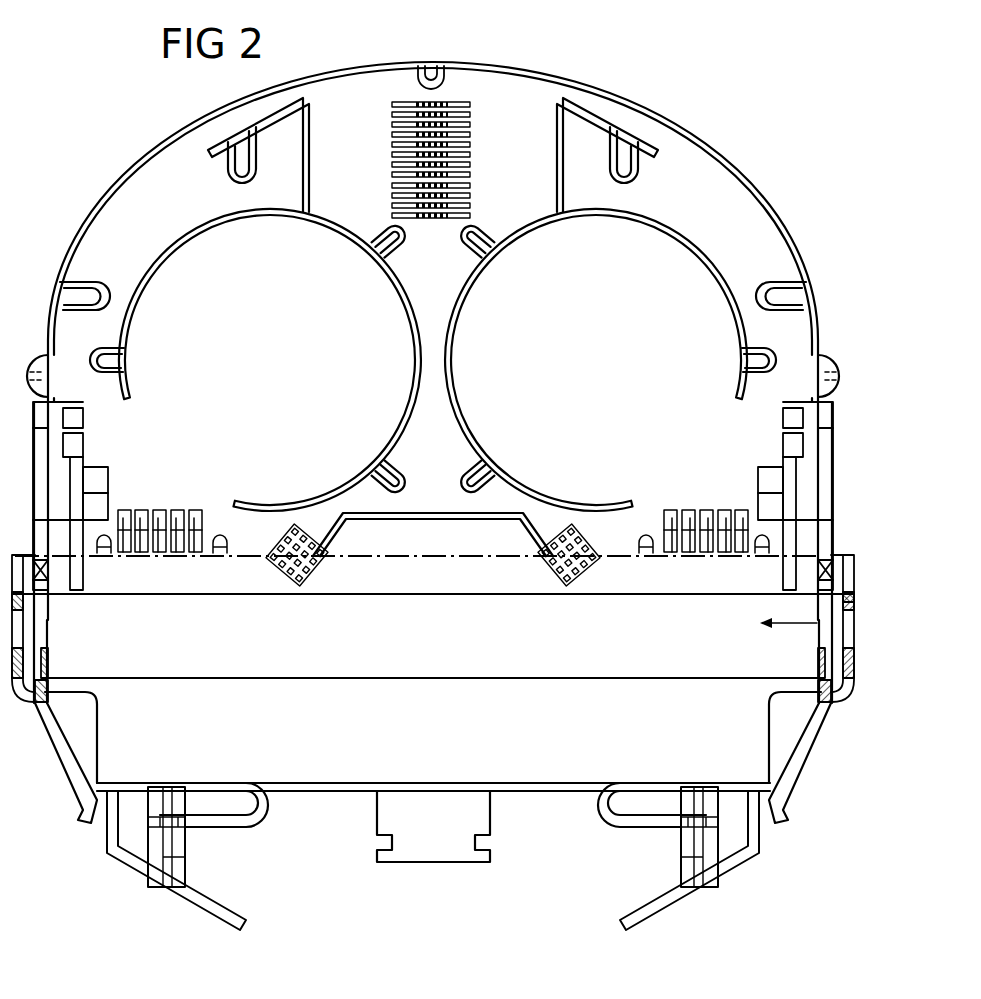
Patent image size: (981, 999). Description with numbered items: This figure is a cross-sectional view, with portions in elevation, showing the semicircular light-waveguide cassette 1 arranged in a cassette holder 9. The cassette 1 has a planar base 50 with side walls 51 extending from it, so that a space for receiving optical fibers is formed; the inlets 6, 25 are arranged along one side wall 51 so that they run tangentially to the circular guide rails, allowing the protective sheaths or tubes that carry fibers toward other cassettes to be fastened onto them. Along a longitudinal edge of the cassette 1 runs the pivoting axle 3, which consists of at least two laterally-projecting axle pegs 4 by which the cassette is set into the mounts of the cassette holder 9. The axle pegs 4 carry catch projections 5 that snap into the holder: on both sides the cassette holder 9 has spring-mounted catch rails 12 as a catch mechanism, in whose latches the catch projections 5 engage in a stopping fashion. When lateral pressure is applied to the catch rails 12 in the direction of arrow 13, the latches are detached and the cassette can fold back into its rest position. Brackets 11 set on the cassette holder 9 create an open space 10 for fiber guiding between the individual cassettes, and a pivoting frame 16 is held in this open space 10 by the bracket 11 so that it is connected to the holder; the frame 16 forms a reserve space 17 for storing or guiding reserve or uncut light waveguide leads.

The cassette 1 is at (433, 329).
The side wall 51 is at (557, 82).
The planar base 50 is at (528, 183).
The pivoting axle 3 is at (432, 556).
The inlet 6 is at (562, 582).
The inlet 25 is at (164, 553).
The axle peg 4 is at (845, 555).
The catch projection 5 is at (855, 592).
The arrow 13 is at (817, 617).
The cassette holder 9 is at (730, 660).
The catch rail 12 is at (850, 682).
The bracket 11 is at (62, 750).
The open space 10 is at (530, 728).
The reserve space 17 is at (302, 855).
The pivoting frame 16 is at (205, 915).